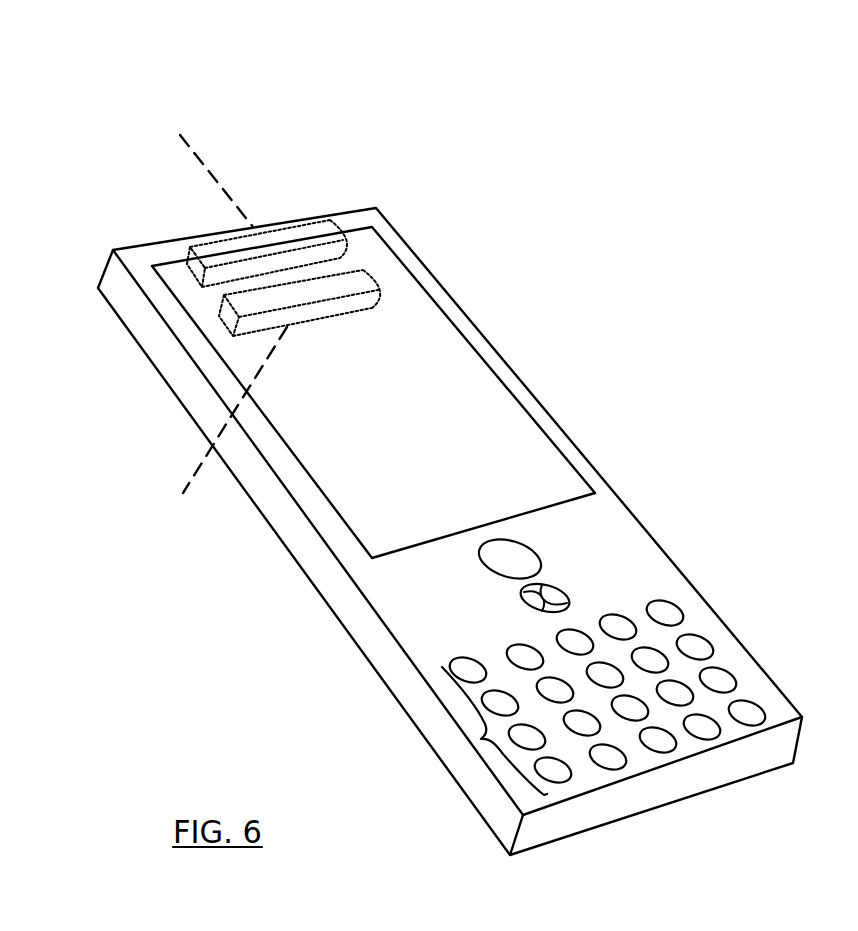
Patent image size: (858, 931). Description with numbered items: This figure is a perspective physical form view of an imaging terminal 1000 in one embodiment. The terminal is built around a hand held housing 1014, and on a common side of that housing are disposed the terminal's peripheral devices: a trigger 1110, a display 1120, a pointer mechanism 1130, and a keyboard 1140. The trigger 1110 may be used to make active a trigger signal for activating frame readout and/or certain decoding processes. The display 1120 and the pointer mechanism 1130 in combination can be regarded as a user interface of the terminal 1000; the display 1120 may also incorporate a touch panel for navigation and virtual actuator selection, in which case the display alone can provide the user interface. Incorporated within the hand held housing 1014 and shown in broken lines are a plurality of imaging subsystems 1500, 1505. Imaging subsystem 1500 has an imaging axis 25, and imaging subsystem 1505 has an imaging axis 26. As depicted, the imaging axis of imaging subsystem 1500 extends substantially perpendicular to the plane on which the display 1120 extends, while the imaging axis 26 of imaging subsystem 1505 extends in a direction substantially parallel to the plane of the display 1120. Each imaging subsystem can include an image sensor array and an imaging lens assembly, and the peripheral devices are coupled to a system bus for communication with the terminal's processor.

The imaging terminal 1000 is at (386, 111).
The hand held housing 1014 is at (700, 622).
The display 1120 is at (444, 386).
The imaging subsystem 1505 is at (317, 231).
The imaging subsystem 1500 is at (371, 288).
The imaging axis 26 is at (215, 184).
The imaging axis 25 is at (203, 463).
The trigger 1110 is at (538, 548).
The pointer mechanism 1130 is at (567, 590).
The keyboard 1140 is at (481, 739).